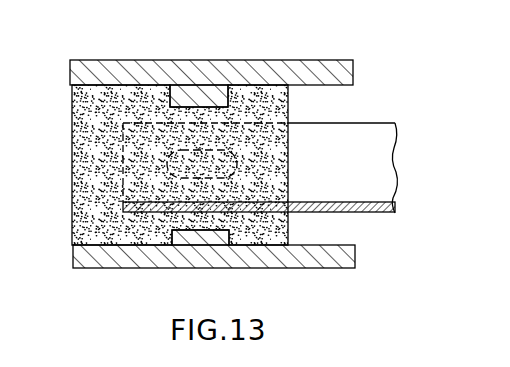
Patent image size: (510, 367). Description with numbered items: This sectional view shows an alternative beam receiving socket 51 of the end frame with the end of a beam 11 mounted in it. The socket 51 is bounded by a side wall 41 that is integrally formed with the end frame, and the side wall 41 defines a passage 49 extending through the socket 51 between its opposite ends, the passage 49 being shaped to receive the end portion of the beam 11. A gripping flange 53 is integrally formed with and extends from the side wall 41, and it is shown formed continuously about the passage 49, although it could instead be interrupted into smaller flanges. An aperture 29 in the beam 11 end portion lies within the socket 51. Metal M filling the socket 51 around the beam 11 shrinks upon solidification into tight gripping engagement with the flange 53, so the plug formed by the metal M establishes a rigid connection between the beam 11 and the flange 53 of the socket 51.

The metal M is at (88, 170).
The side wall 41 is at (134, 80).
The socket 51 is at (268, 82).
The passage 49 is at (353, 85).
The flange 53 is at (172, 232).
The beam 11 is at (393, 168).
The aperture 29 is at (237, 162).